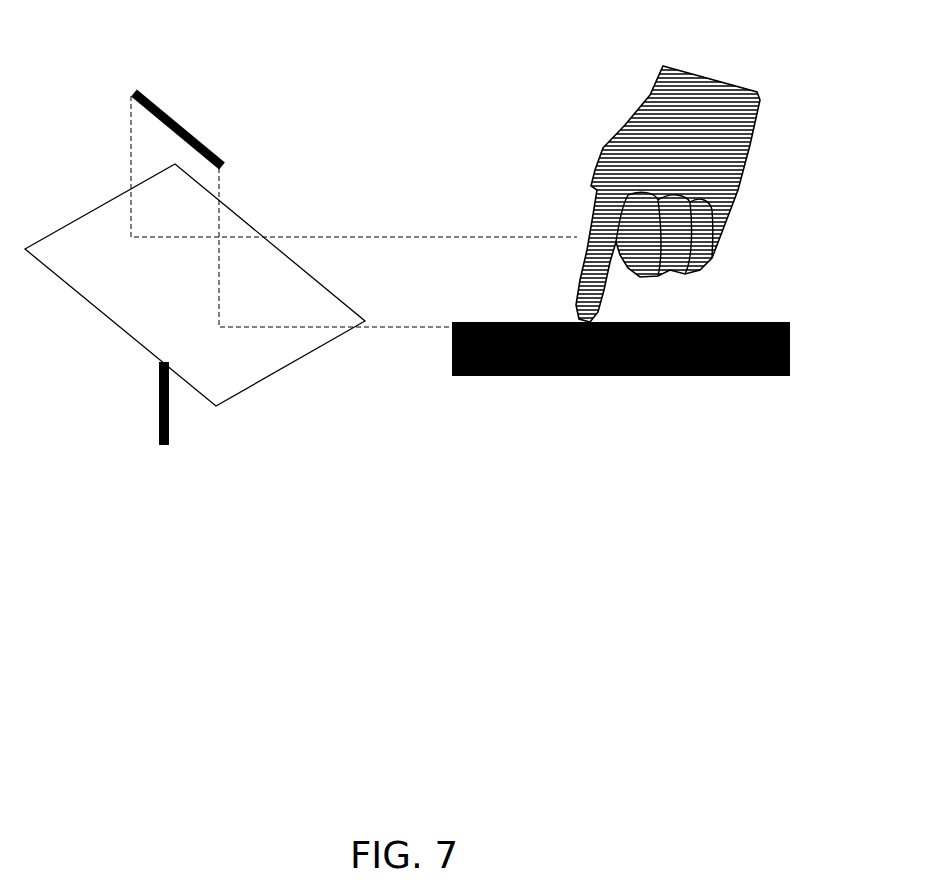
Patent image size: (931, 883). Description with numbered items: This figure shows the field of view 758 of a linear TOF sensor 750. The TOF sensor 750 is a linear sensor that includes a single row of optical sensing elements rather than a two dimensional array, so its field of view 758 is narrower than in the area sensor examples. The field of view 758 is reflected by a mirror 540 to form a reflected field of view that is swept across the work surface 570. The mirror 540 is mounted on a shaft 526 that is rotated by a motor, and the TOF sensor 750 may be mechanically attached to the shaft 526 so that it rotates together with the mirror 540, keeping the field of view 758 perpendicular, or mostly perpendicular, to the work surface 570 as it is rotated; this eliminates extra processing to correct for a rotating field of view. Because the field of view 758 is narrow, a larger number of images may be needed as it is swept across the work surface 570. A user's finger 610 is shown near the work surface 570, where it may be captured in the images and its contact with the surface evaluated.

The linear TOF sensor 750 is at (168, 96).
The field of view 758 is at (425, 234).
The mirror 540 is at (98, 324).
The shaft 526 is at (152, 421).
The work surface 570 is at (655, 384).
The finger 610 is at (615, 300).